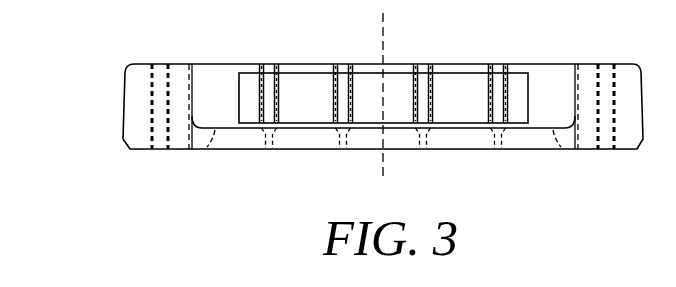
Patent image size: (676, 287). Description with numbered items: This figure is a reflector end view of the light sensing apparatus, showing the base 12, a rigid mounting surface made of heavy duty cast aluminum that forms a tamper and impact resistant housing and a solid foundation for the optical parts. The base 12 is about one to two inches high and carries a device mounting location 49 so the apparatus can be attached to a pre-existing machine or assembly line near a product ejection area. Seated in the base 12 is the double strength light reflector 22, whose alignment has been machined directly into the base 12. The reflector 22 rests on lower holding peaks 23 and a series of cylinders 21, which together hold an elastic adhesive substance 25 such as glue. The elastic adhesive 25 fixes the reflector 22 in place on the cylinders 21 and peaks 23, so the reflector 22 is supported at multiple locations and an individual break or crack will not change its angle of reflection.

The base 12 is at (229, 150).
The cylinders 21 is at (498, 67).
The light reflector 22 is at (521, 82).
The lower holding peaks 23 is at (510, 128).
The elastic adhesive substance 25 is at (488, 68).
The device mounting location 49 is at (157, 150).